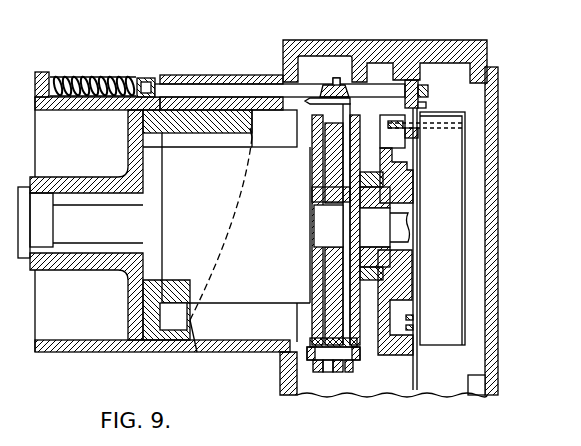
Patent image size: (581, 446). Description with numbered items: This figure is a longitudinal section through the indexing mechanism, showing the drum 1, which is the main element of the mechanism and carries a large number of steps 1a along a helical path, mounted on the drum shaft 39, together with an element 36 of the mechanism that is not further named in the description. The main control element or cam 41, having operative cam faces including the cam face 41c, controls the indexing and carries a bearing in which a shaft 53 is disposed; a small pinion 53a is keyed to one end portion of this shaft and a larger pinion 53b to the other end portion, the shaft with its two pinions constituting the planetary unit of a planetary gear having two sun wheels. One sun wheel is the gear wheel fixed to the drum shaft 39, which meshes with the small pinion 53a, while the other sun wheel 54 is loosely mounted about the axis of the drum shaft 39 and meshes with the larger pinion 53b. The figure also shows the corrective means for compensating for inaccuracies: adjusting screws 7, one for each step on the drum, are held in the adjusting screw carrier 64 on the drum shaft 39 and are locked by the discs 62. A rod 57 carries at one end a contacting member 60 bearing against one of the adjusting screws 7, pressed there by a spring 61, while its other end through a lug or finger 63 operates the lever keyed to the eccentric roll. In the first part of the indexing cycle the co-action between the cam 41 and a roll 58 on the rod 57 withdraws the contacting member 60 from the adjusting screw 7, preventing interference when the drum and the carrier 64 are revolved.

The drum 1 is at (217, 224).
The steps 1a is at (199, 350).
The adjusting screws 7 is at (433, 122).
The shaft 36 is at (398, 305).
The drum shaft 39 is at (80, 222).
The main control element or cam 41 is at (338, 160).
The cam face 41c is at (351, 96).
The shaft 53 is at (340, 374).
The small pinion 53a is at (352, 372).
The larger pinion 53b is at (318, 373).
The sun wheel 54 is at (312, 318).
The rod 57 is at (204, 88).
The roll 58 is at (337, 103).
The contacting member 60 is at (420, 107).
The spring 61 is at (90, 74).
The discs 62 is at (452, 222).
The lug or finger 63 is at (148, 76).
The adjusting screw carrier 64 is at (422, 170).